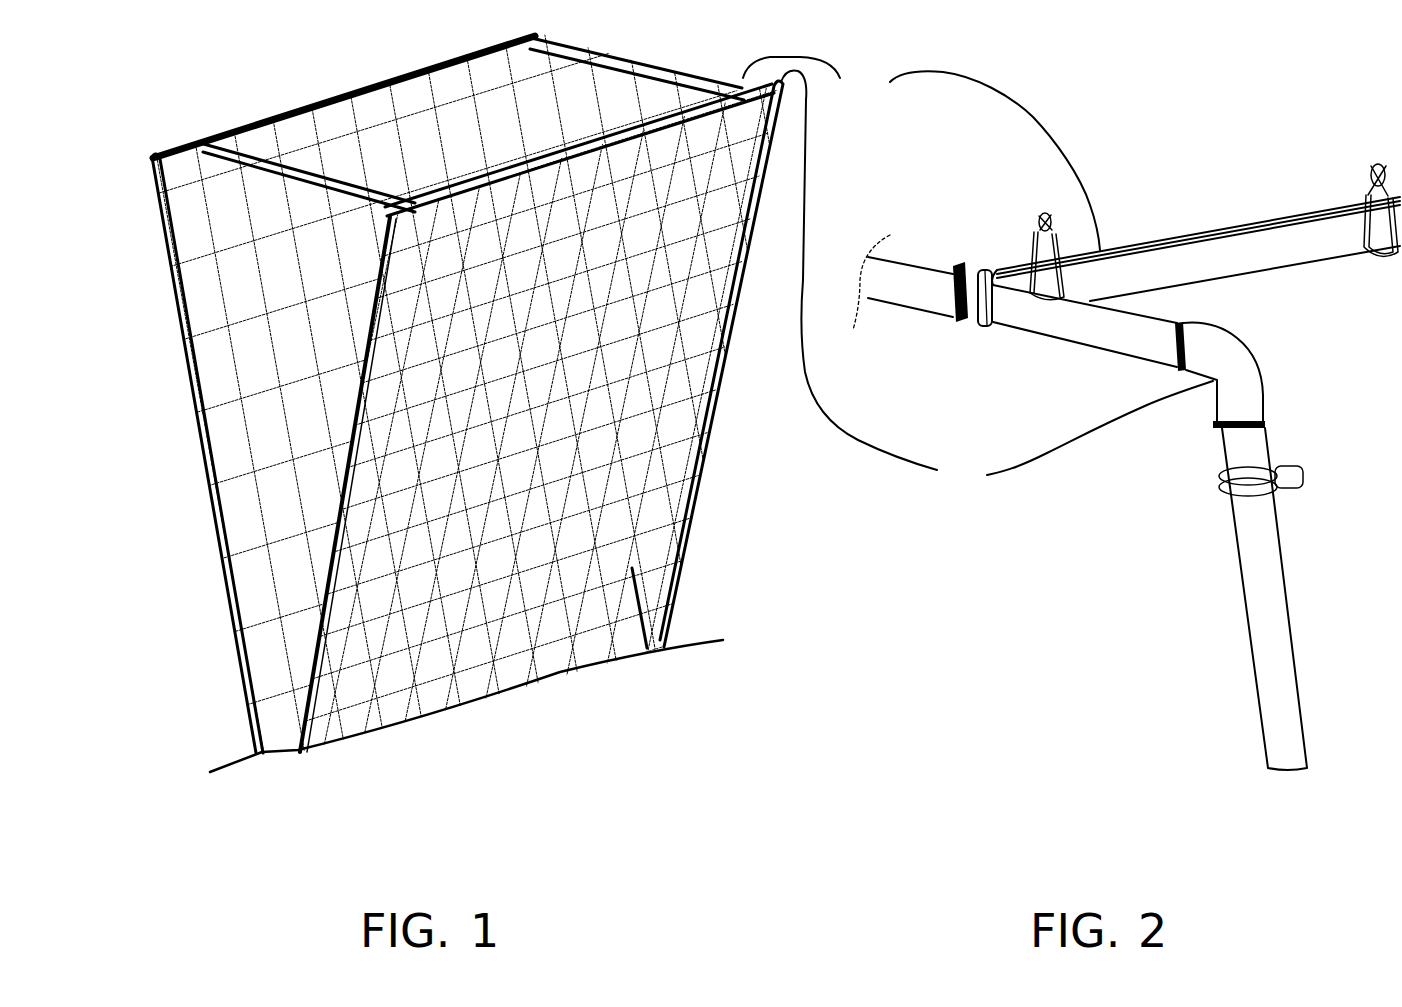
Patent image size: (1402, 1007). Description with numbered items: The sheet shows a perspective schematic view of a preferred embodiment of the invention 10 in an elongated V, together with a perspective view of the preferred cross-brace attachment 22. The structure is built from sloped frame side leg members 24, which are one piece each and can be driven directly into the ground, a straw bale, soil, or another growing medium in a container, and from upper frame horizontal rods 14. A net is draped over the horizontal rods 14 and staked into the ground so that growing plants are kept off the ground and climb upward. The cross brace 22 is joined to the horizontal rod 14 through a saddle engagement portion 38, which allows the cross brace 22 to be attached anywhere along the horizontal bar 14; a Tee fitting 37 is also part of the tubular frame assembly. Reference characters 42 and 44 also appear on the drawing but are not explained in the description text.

In FIG. 1, the invention in general 10 is at (785, 667).
In FIG. 1, the frame horizontal rod 14 is at (290, 117).
In FIG. 2, the frame horizontal rod 14 is at (1085, 352).
In FIG. 1, the top cross brace 22 is at (840, 263).
In FIG. 1, the frame side leg member 24 is at (210, 493).
In FIG. 2, the frame side leg member 24 is at (1248, 623).
In FIG. 2, the Tee fitting 37 is at (1051, 285).
In FIG. 2, the saddle engagement portion 38 is at (977, 268).
In FIG. 1, the net attachment 42 is at (627, 477).
In FIG. 2, the pipe clamp 44 is at (1278, 462).